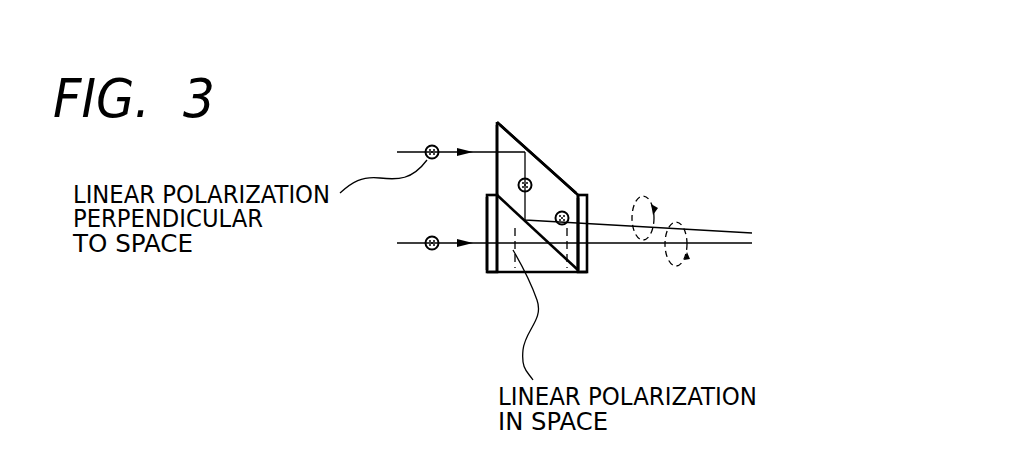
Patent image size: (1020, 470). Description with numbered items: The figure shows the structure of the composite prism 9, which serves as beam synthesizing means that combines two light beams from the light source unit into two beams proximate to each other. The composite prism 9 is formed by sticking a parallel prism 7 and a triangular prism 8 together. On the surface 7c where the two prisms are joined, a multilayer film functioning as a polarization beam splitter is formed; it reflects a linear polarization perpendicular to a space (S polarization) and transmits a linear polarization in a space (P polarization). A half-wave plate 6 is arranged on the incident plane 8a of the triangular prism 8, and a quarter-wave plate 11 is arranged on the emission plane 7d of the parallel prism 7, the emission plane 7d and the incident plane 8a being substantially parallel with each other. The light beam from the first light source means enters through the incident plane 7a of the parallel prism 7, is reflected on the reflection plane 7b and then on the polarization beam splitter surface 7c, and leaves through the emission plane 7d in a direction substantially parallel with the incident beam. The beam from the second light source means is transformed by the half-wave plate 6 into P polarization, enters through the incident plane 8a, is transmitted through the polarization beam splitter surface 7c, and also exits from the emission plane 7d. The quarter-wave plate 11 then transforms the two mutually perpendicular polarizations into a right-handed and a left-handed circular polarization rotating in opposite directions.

The half-wave plate 6 is at (489, 273).
The parallel prism 7 is at (549, 171).
The incident plane 7a is at (497, 140).
The reflection plane 7b is at (544, 190).
The polarization beam splitter surface 7c is at (506, 206).
The emission plane 7d is at (586, 211).
The triangular prism 8 is at (549, 266).
The incident plane 8a is at (495, 253).
The composite prism 9 is at (635, 128).
The quarter-wave plate 11 is at (580, 274).